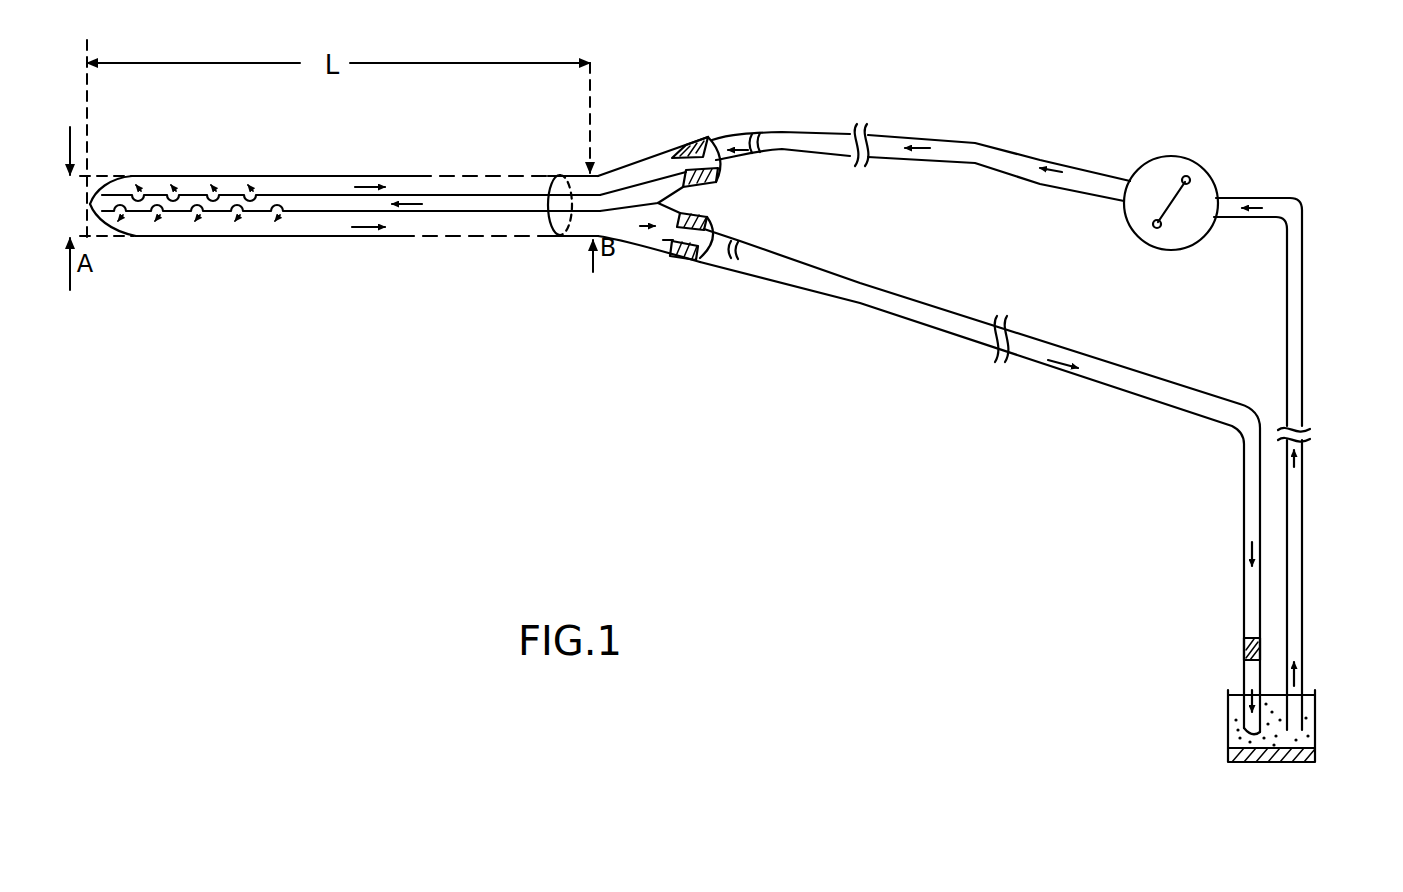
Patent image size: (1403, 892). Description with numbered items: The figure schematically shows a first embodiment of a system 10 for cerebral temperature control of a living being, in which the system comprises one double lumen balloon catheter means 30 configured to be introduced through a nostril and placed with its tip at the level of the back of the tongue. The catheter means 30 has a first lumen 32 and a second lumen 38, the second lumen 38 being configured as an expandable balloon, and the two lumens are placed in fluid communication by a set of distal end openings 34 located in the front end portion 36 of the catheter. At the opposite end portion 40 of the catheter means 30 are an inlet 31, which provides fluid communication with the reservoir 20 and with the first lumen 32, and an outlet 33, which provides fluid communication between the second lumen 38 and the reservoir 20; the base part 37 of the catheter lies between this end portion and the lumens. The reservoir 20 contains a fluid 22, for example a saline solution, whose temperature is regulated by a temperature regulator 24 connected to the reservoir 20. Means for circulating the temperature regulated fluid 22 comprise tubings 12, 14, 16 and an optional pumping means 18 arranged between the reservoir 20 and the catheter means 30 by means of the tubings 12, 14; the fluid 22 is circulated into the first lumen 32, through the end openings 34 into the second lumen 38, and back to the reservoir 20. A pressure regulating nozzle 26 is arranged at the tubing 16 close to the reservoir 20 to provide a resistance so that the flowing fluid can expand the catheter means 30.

The system 10 is at (972, 50).
The tubing 12 is at (958, 143).
The tubing 14 is at (1304, 326).
The tubing 16 is at (1065, 374).
The pumping means 18 is at (1179, 156).
The reservoir 20 is at (1270, 737).
The fluid 22 is at (1238, 724).
The temperature regulator 24 is at (1310, 758).
The pressure regulating nozzle 26 is at (1243, 648).
The double lumen balloon catheter means 30 is at (345, 207).
The inlet 31 is at (694, 170).
The first lumen 32 is at (498, 205).
The outlet 33 is at (687, 237).
The end openings 34 is at (238, 212).
The front end portion 36 is at (147, 248).
The base part 37 is at (571, 245).
The second lumen 38 is at (413, 185).
The end portion 40 is at (654, 147).